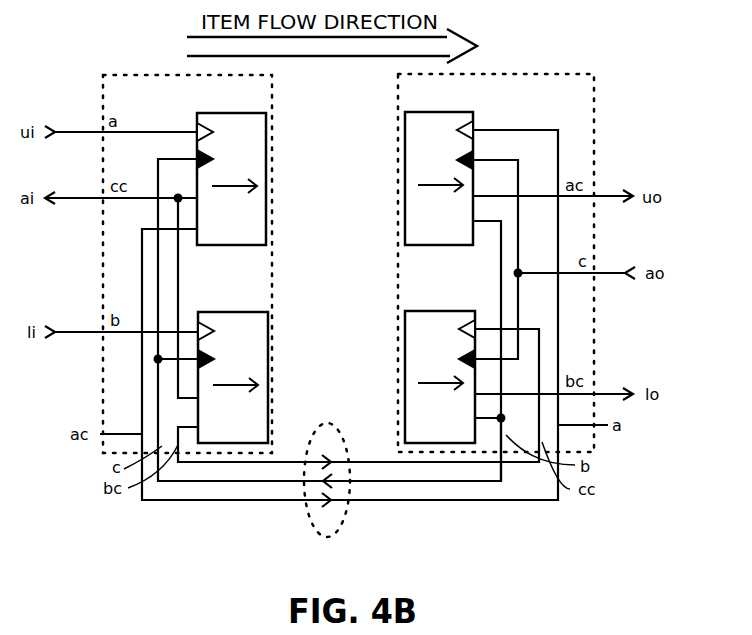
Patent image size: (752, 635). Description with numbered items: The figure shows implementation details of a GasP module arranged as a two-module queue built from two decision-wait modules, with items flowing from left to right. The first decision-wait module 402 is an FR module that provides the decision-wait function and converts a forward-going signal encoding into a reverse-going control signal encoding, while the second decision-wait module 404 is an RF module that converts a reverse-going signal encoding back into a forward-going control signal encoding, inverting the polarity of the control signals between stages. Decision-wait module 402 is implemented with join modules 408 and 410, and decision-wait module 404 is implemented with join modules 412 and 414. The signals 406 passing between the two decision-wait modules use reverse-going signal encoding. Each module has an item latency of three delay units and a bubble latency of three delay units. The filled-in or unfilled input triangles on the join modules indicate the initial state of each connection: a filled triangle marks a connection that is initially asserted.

The decision-wait module 402 is at (187, 264).
The decision-wait module 404 is at (496, 263).
The signals 406 is at (330, 537).
The join module 408 is at (231, 179).
The join module 410 is at (233, 377).
The join module 412 is at (439, 178).
The join module 414 is at (440, 377).